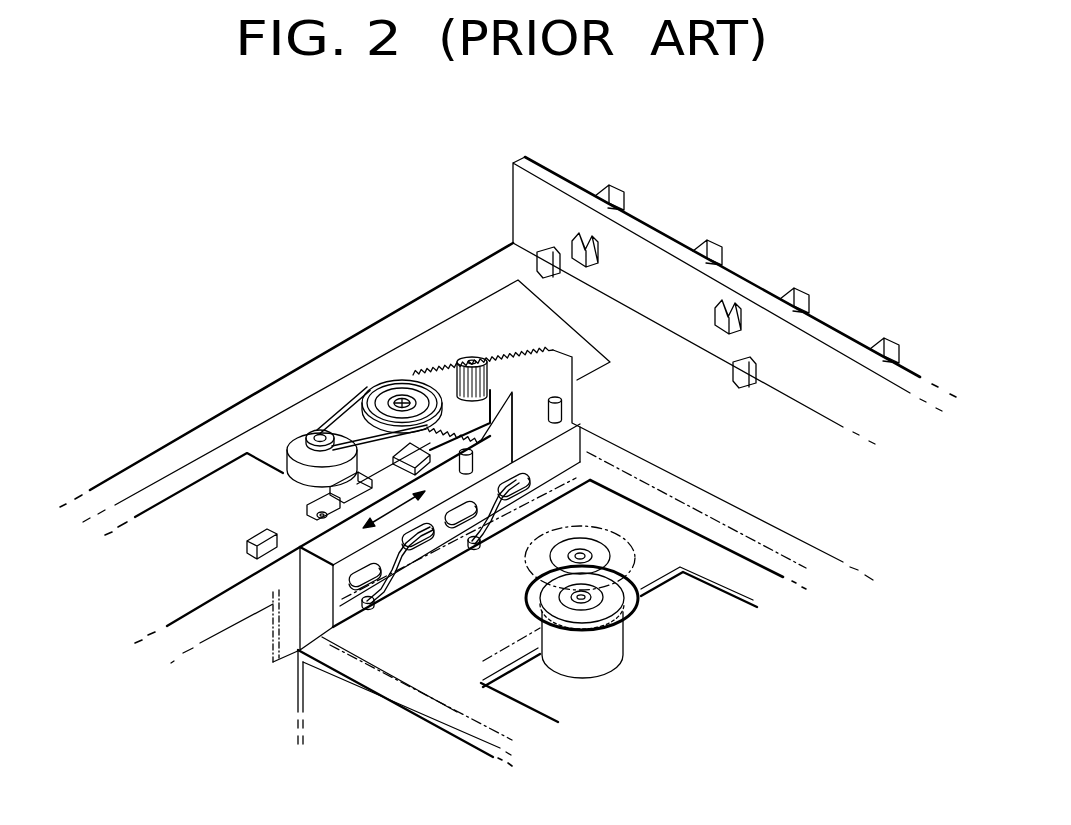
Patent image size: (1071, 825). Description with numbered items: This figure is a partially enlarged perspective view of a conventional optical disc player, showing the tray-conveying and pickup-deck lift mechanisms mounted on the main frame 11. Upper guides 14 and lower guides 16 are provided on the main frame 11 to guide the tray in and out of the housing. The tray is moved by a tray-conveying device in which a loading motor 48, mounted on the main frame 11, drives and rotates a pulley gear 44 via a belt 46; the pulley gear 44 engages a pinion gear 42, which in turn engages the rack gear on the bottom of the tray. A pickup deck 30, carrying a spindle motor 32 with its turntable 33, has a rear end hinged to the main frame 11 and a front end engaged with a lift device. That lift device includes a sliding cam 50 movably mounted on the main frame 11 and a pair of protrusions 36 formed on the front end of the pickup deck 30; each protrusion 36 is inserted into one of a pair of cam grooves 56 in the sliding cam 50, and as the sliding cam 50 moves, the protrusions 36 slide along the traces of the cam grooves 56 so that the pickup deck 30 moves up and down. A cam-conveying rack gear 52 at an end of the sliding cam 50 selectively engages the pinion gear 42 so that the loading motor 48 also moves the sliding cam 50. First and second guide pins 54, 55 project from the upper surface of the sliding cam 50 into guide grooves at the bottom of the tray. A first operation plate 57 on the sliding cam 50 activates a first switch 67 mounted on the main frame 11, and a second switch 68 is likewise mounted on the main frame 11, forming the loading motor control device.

The main frame 11 is at (333, 357).
The upper guides 14 is at (588, 248).
The lower guides 16 is at (545, 248).
The pickup deck 30 is at (393, 697).
The spindle motor 32 is at (613, 650).
The turntable 33 is at (640, 605).
The protrusions 36 is at (375, 606).
The pinion gear 42 is at (470, 356).
The pulley gear 44 is at (383, 380).
The belt 46 is at (327, 430).
The loading motor 48 is at (295, 445).
The sliding cam 50 is at (557, 370).
The cam-conveying rack gear 52 is at (515, 357).
The first guide pin 54 is at (565, 405).
The second guide pin 55 is at (475, 458).
The cam grooves 56 is at (500, 505).
The first operation plate 57 is at (310, 503).
The first switch 67 is at (317, 520).
The second switch 68 is at (330, 494).